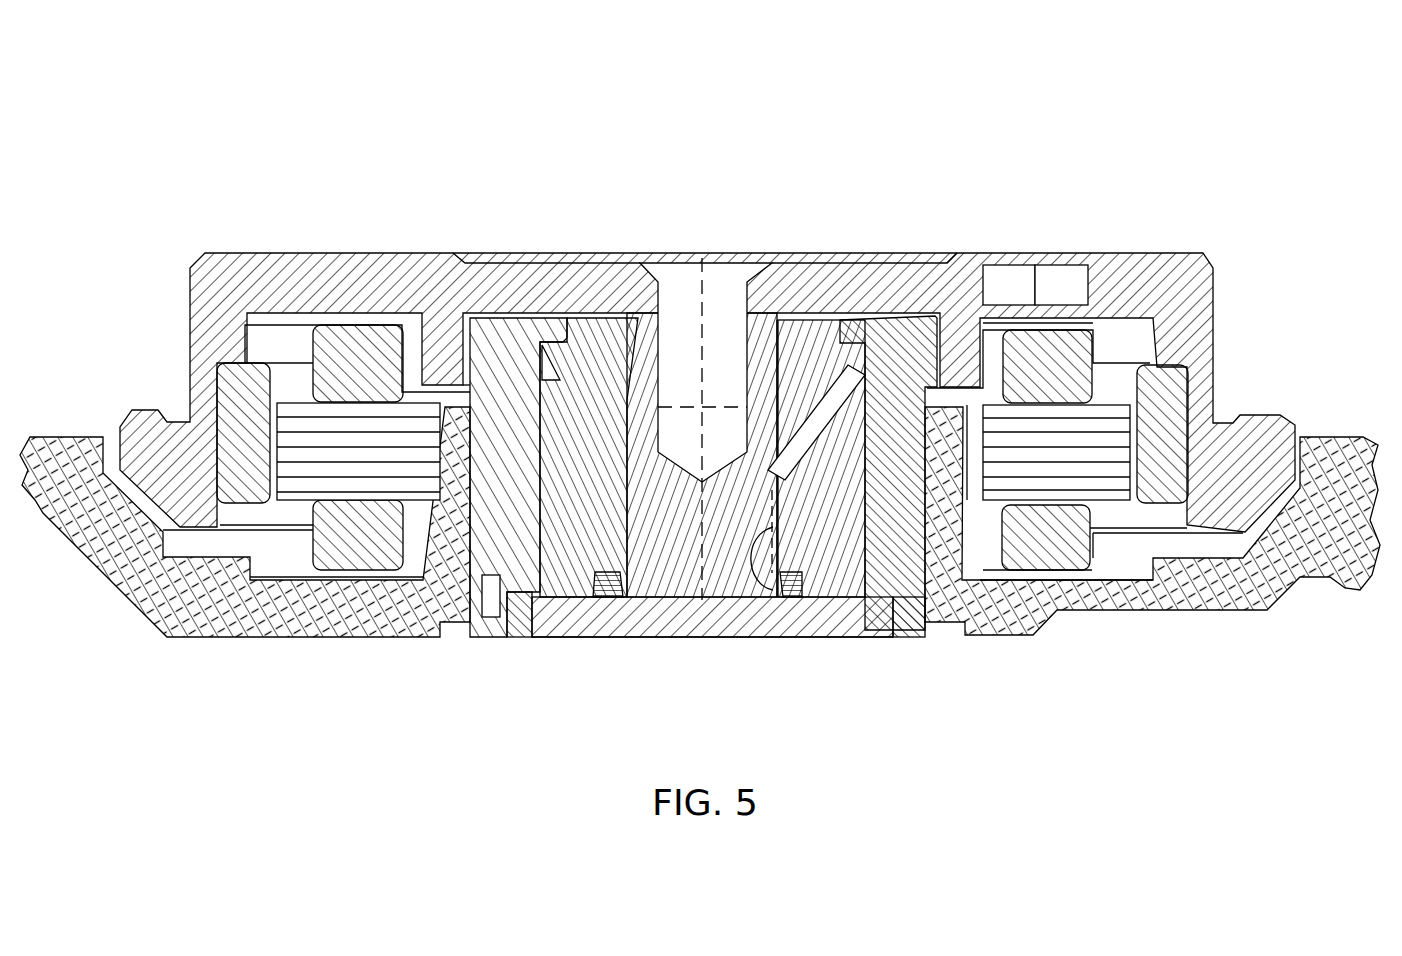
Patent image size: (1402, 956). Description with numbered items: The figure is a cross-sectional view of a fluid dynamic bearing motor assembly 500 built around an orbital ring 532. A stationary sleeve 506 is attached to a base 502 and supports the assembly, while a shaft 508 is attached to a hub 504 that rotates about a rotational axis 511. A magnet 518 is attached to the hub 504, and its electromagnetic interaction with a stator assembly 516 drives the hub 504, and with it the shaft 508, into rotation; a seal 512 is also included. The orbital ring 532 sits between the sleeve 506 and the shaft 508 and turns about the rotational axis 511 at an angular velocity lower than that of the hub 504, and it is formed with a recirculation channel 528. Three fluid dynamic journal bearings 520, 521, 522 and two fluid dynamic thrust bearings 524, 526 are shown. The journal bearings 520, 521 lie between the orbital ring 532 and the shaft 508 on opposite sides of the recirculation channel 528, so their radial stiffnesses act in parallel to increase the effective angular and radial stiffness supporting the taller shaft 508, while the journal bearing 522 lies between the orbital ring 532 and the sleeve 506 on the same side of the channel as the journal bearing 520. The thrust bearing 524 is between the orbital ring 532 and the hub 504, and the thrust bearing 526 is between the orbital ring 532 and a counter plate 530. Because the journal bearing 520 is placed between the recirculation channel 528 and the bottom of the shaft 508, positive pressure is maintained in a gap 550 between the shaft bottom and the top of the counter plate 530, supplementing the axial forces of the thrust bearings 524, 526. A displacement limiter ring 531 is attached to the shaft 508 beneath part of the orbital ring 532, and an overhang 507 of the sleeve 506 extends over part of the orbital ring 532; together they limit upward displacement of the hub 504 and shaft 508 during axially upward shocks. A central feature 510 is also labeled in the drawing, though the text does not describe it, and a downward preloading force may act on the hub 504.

The fluid dynamic bearing motor assembly 500 is at (163, 110).
The base 502 is at (110, 590).
The hub 504 is at (292, 253).
The sleeve 506 is at (470, 263).
The overhang 507 is at (548, 320).
The shaft 508 is at (648, 263).
The bore 510 is at (733, 290).
The rotational axis 511 is at (692, 290).
The seal 512 is at (985, 300).
The stator assembly 516 is at (1105, 390).
The magnet 518 is at (1160, 365).
The fluid dynamic journal bearing 520 is at (773, 597).
The fluid dynamic journal bearing 521 is at (769, 300).
The fluid dynamic journal bearing 522 is at (921, 640).
The fluid dynamic thrust bearing 524 is at (818, 263).
The fluid dynamic thrust bearing 526 is at (847, 602).
The recirculation channel 528 is at (932, 318).
The counter plate 530 is at (643, 637).
The displacement limiter ring 531 is at (603, 597).
The orbital ring 532 is at (531, 637).
The gap 550 is at (680, 597).